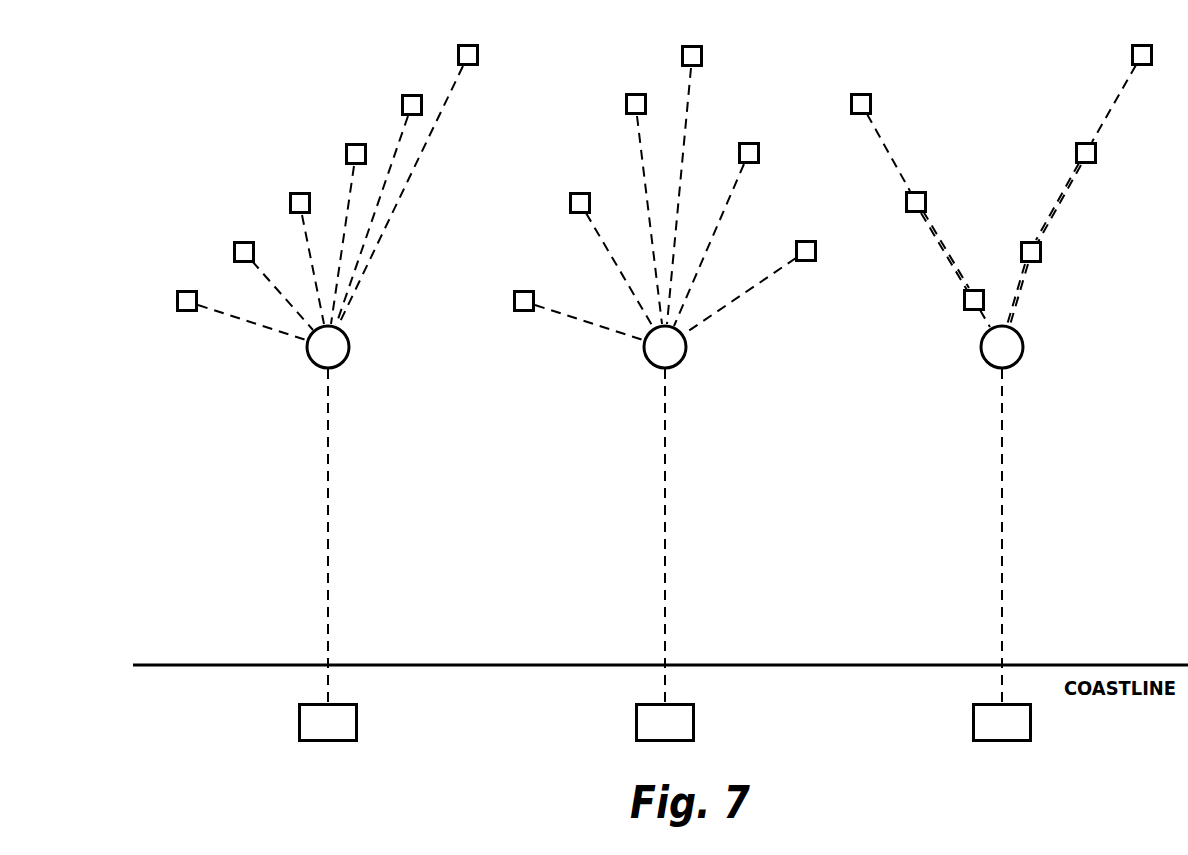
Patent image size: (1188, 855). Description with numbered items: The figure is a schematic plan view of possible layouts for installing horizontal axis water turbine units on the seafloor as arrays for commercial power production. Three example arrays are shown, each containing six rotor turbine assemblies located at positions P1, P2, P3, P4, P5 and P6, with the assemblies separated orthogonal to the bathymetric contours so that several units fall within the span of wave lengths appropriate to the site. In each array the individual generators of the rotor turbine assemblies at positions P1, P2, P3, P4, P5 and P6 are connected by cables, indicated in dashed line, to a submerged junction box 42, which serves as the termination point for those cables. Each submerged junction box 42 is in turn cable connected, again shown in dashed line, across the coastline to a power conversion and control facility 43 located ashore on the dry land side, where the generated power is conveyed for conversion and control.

The rotor turbine assembly position P1 is at (185, 299).
The rotor turbine assembly position P2 is at (241, 250).
The rotor turbine assembly position P3 is at (297, 201).
The rotor turbine assembly position P4 is at (353, 152).
The rotor turbine assembly position P5 is at (410, 103).
The rotor turbine assembly position P6 is at (464, 59).
The submerged junction box 42 is at (665, 347).
The conversion and control facility 43 is at (665, 723).